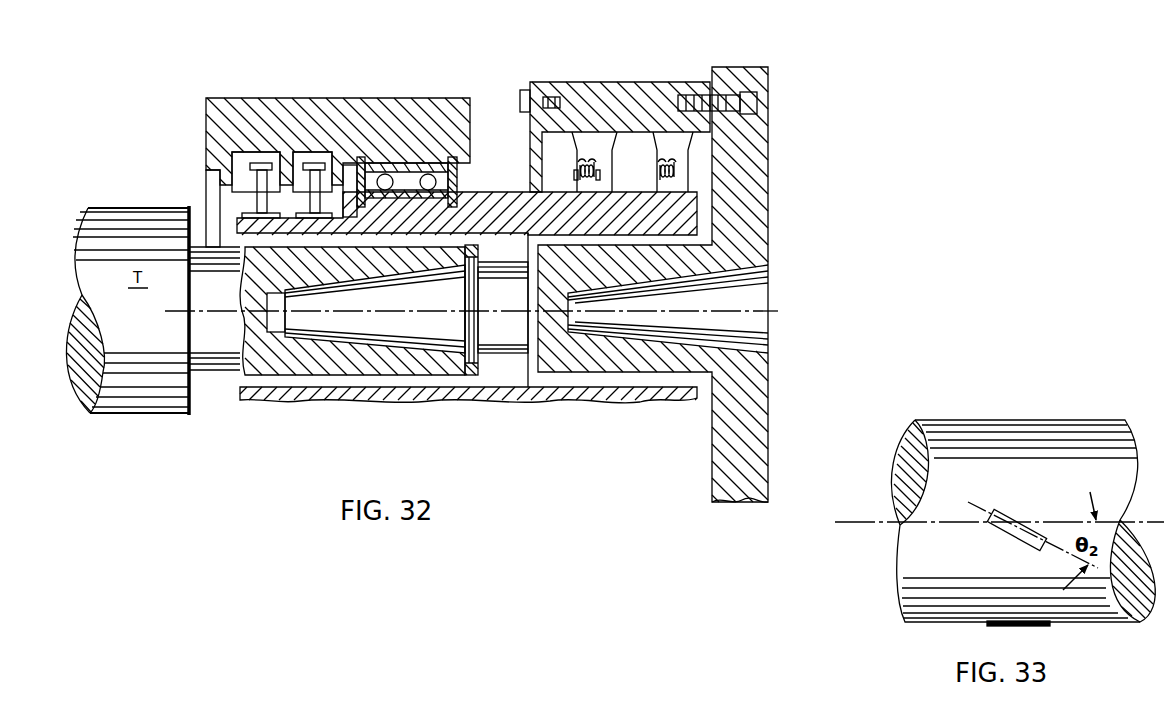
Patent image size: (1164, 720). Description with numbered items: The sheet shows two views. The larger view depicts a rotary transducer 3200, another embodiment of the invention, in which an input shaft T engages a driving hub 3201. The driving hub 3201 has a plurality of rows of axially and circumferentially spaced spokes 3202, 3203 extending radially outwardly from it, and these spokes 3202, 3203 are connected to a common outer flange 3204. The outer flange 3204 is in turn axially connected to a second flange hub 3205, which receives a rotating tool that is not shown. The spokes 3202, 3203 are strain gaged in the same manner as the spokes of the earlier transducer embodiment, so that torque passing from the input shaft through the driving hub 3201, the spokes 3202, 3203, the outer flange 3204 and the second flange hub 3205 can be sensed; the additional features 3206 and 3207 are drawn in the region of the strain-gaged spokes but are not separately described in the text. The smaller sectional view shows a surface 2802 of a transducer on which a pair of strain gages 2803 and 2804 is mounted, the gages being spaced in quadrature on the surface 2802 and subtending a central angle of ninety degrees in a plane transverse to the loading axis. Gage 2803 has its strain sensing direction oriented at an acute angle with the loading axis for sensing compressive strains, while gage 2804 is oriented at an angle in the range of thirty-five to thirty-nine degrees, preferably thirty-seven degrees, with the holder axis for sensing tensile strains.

In FIG. 32, the rotary transducer 3200 is at (445, 92).
In FIG. 32, the driving hub 3201 is at (505, 192).
In FIG. 32, the spoke 3202 is at (608, 122).
In FIG. 32, the spoke 3203 is at (683, 160).
In FIG. 32, the outer flange 3204 is at (616, 100).
In FIG. 32, the second flange hub 3205 is at (768, 228).
In FIG. 32, the spring 3206 is at (600, 160).
In FIG. 32, the spring 3207 is at (602, 178).
In FIG. 33, the surface 2802 is at (955, 420).
In FIG. 33, the strain gage 2803 is at (1040, 627).
In FIG. 33, the strain gage 2804 is at (1008, 508).